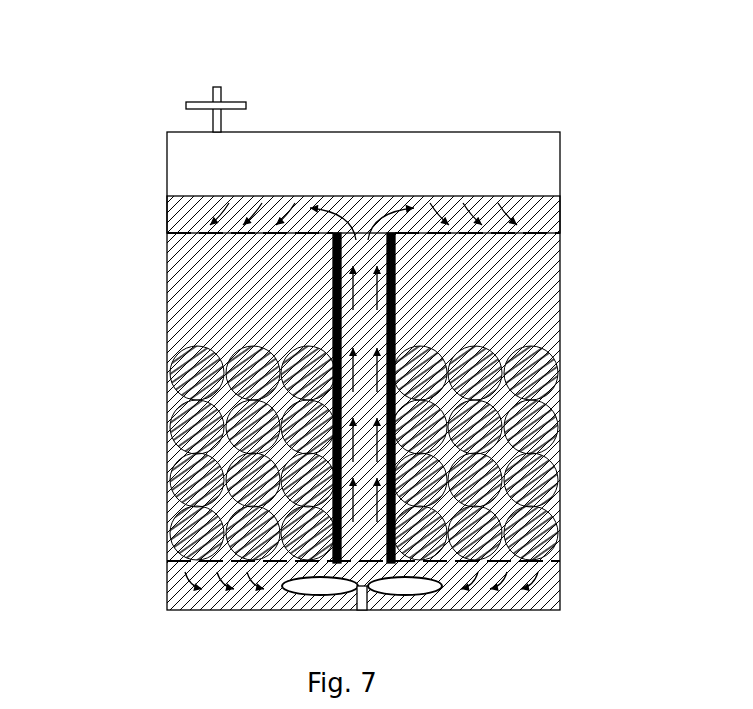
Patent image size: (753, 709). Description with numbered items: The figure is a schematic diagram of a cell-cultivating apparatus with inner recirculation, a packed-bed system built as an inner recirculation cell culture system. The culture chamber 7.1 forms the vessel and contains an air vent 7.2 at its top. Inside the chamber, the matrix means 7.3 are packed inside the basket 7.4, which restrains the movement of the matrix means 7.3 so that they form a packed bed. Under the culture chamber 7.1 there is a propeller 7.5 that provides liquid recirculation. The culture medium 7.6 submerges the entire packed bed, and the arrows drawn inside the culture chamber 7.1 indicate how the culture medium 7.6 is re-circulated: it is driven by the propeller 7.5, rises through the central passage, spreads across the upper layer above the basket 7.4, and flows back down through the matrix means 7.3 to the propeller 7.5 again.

The culture chamber 7.1 is at (562, 152).
The air vent 7.2 is at (229, 88).
The matrix means 7.3 is at (527, 368).
The basket 7.4 is at (190, 232).
The propeller 7.5 is at (408, 598).
The culture medium 7.6 is at (544, 216).